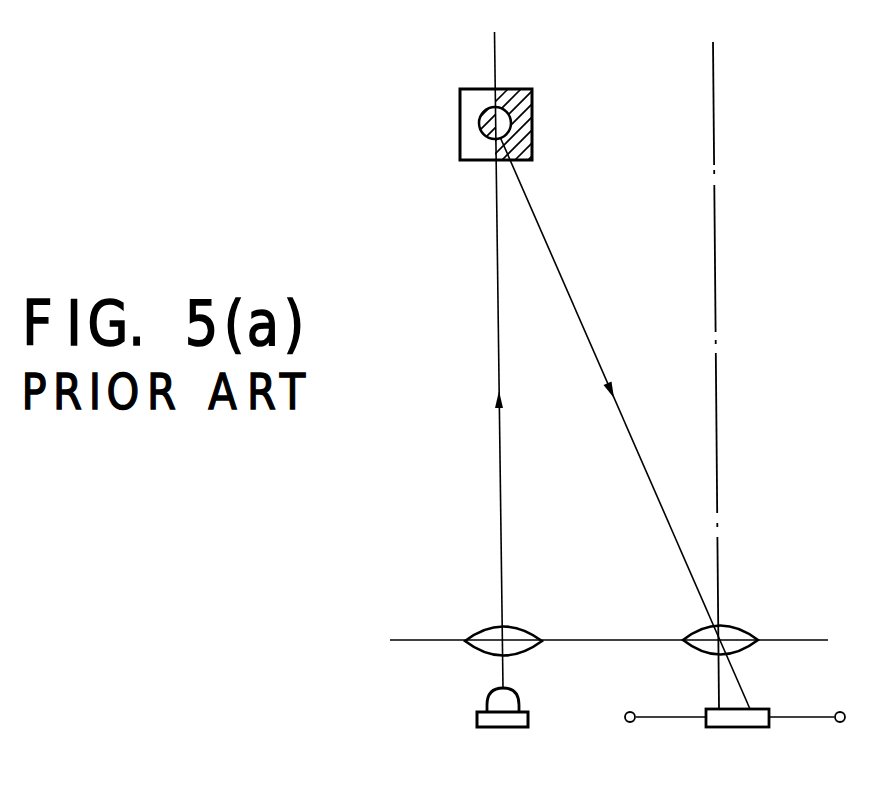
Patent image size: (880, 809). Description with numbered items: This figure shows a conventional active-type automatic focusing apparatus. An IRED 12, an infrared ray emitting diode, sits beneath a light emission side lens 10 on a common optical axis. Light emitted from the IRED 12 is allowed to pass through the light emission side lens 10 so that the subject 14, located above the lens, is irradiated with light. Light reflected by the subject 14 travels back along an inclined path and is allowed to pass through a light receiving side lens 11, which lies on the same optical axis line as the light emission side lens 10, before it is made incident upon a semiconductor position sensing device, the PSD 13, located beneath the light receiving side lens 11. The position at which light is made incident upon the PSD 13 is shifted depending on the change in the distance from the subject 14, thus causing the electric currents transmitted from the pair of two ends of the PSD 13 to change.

The light emission side lens 10 is at (527, 628).
The light receiving side lens 11 is at (745, 622).
The IRED 12 is at (508, 728).
The semiconductor position sensing device 13 is at (752, 728).
The subject 14 is at (473, 89).